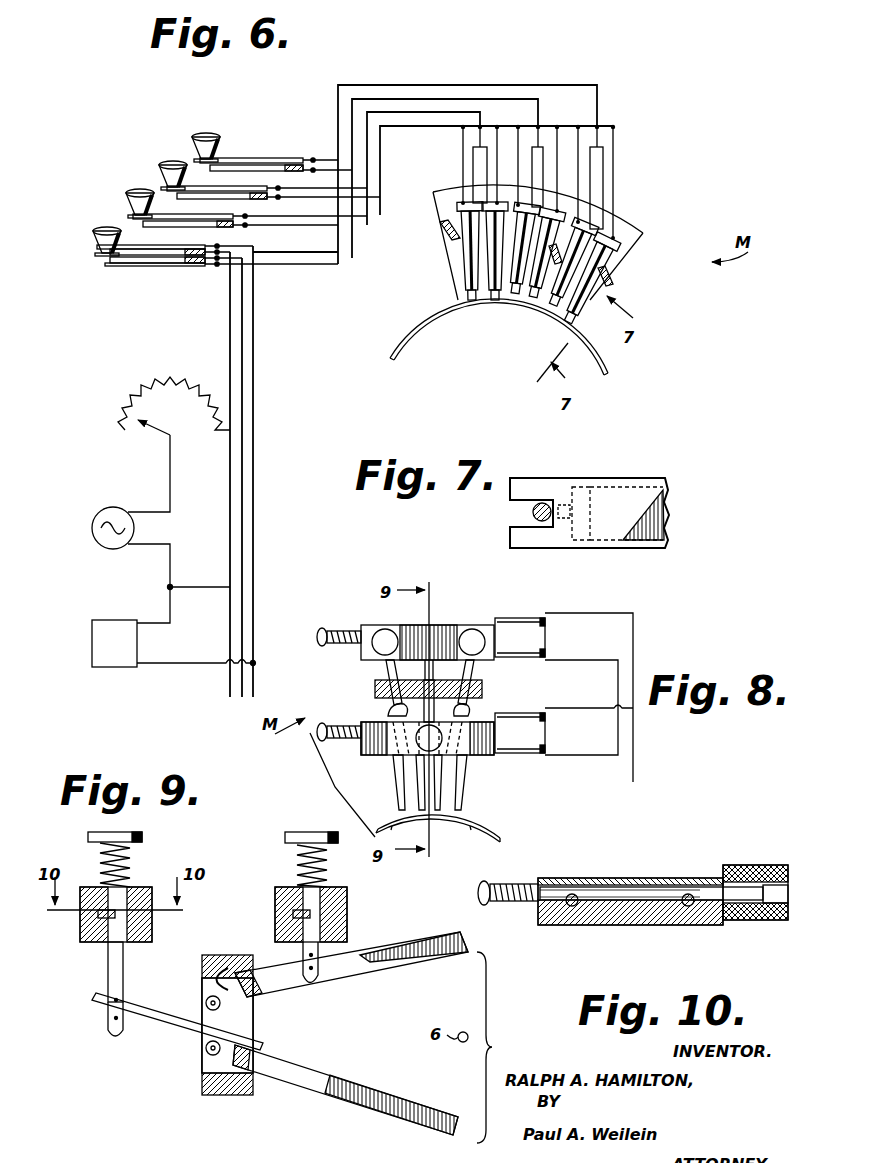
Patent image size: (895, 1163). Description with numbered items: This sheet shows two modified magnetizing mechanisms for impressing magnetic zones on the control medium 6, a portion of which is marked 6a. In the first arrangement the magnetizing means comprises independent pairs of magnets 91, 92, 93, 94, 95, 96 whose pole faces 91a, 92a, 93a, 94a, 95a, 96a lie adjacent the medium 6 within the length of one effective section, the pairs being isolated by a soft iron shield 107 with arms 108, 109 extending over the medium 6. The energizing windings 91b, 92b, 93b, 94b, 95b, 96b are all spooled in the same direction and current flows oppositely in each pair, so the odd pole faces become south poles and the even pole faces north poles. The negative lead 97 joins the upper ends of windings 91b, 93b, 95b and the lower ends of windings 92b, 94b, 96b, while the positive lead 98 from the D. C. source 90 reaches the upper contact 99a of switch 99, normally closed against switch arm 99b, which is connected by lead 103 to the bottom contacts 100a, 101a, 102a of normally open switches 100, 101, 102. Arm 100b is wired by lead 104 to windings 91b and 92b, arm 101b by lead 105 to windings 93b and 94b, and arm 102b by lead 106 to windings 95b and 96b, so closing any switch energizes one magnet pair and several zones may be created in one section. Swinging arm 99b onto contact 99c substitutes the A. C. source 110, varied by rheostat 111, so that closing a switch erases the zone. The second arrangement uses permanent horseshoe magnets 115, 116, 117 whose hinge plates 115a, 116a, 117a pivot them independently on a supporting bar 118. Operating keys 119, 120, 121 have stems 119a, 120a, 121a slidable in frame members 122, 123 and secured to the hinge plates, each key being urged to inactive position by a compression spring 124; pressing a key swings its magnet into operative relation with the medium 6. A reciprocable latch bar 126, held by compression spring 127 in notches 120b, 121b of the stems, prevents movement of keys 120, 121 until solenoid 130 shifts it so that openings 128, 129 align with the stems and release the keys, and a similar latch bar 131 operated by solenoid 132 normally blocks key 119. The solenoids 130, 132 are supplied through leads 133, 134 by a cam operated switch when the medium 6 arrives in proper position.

In FIG. 6, the control medium 6 is at (612, 364).
In FIG. 7, the control medium 6 is at (530, 512).
In FIG. 8, the control medium 6 is at (503, 828).
In FIG. 8, the ring segment 6a is at (472, 826).
In FIG. 6, the D. C. source 90 is at (92, 632).
In FIG. 6, the magnet 91 is at (460, 285).
In FIG. 6, the pole face 91a is at (470, 302).
In FIG. 6, the energizing winding 91b is at (462, 268).
In FIG. 6, the magnet 92 is at (485, 258).
In FIG. 6, the pole face 92a is at (490, 302).
In FIG. 6, the energizing winding 92b is at (445, 225).
In FIG. 6, the magnet 93 is at (518, 240).
In FIG. 6, the pole face 93a is at (512, 300).
In FIG. 6, the energizing winding 93b is at (575, 222).
In FIG. 6, the magnet 94 is at (590, 232).
In FIG. 6, the pole face 94a is at (530, 302).
In FIG. 6, the energizing winding 94b is at (580, 225).
In FIG. 6, the magnet 95 is at (610, 250).
In FIG. 6, the pole face 95a is at (552, 310).
In FIG. 6, the energizing winding 95b is at (600, 262).
In FIG. 6, the magnet 96 is at (604, 292).
In FIG. 7, the magnet 96 is at (665, 530).
In FIG. 6, the pole face 96a is at (572, 330).
In FIG. 7, the pole face 96a is at (565, 503).
In FIG. 6, the energizing winding 96b is at (612, 280).
In FIG. 6, the negative lead 97 is at (508, 140).
In FIG. 6, the positive lead 98 is at (603, 300).
In FIG. 6, the switch 99 is at (92, 246).
In FIG. 6, the upper contact 99a is at (110, 252).
In FIG. 6, the switch arm 99b is at (172, 263).
In FIG. 6, the contact 99c is at (120, 266).
In FIG. 6, the switch 100 is at (130, 212).
In FIG. 6, the bottom contact 100a is at (190, 228).
In FIG. 6, the switch arm 100b is at (150, 219).
In FIG. 6, the switch 101 is at (162, 182).
In FIG. 6, the bottom contact 101a is at (222, 200).
In FIG. 6, the switch arm 101b is at (267, 180).
In FIG. 6, the switch 102 is at (195, 140).
In FIG. 6, the bottom contact 102a is at (230, 158).
In FIG. 6, the switch arm 102b is at (265, 165).
In FIG. 6, the lead 103 is at (338, 258).
In FIG. 6, the lead 104 is at (470, 110).
In FIG. 6, the lead 105 is at (460, 99).
In FIG. 6, the lead 106 is at (418, 78).
In FIG. 6, the soft iron shield 107 is at (600, 250).
In FIG. 7, the shield arm 108 is at (645, 480).
In FIG. 6, the shield arm 109 is at (557, 217).
In FIG. 6, the A. C. source 110 is at (92, 538).
In FIG. 6, the rheostat 111 is at (190, 390).
In FIG. 8, the permanent horseshoe magnet 115 is at (388, 710).
In FIG. 8, the hinge plate 115a is at (385, 672).
In FIG. 8, the permanent horseshoe magnet 116 is at (440, 688).
In FIG. 8, the hinge plate 116a is at (438, 670).
In FIG. 9, the hinge plate 116a is at (360, 945).
In FIG. 8, the permanent horseshoe magnet 117 is at (470, 712).
In FIG. 9, the permanent horseshoe magnet 117 is at (348, 1082).
In FIG. 8, the hinge plate 117a is at (480, 690).
In FIG. 9, the hinge plate 117a is at (180, 1035).
In FIG. 8, the supporting bar 118 is at (375, 690).
In FIG. 9, the supporting bar 118 is at (202, 972).
In FIG. 8, the operating key 119 is at (420, 748).
In FIG. 9, the operating key 119 is at (300, 830).
In FIG. 9, the key stem 119a is at (318, 988).
In FIG. 8, the operating key 120 is at (400, 640).
In FIG. 10, the key stem 120a is at (565, 920).
In FIG. 10, the notch 120b is at (598, 880).
In FIG. 8, the operating key 121 is at (472, 635).
In FIG. 9, the operating key 121 is at (142, 836).
In FIG. 9, the key stem 121a is at (108, 985).
In FIG. 10, the key stem 121a is at (692, 912).
In FIG. 9, the notch 121b is at (110, 945).
In FIG. 10, the notch 121b is at (695, 885).
In FIG. 8, the frame member 122 is at (395, 758).
In FIG. 9, the frame member 122 is at (275, 905).
In FIG. 8, the frame member 123 is at (440, 635).
In FIG. 9, the frame member 123 is at (152, 932).
In FIG. 10, the frame member 123 is at (655, 915).
In FIG. 9, the compression spring 124 is at (130, 866).
In FIG. 8, the latch bar 126 is at (380, 632).
In FIG. 9, the latch bar 126 is at (80, 928).
In FIG. 10, the latch bar 126 is at (620, 912).
In FIG. 8, the compression spring 127 is at (320, 630).
In FIG. 10, the compression spring 127 is at (520, 884).
In FIG. 10, the opening 128 is at (560, 885).
In FIG. 10, the opening 129 is at (665, 885).
In FIG. 8, the solenoid 130 is at (527, 625).
In FIG. 10, the solenoid 130 is at (765, 865).
In FIG. 8, the latch bar 131 is at (325, 722).
In FIG. 9, the latch bar 131 is at (275, 930).
In FIG. 8, the solenoid 132 is at (545, 733).
In FIG. 8, the lead 133 is at (618, 778).
In FIG. 8, the lead 134 is at (633, 782).